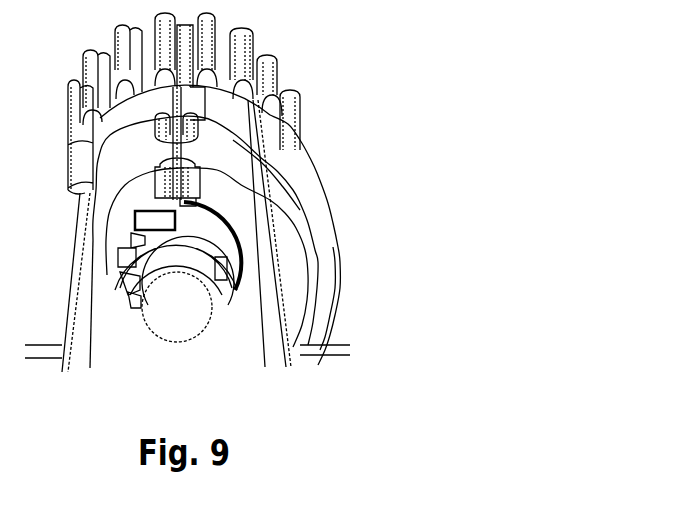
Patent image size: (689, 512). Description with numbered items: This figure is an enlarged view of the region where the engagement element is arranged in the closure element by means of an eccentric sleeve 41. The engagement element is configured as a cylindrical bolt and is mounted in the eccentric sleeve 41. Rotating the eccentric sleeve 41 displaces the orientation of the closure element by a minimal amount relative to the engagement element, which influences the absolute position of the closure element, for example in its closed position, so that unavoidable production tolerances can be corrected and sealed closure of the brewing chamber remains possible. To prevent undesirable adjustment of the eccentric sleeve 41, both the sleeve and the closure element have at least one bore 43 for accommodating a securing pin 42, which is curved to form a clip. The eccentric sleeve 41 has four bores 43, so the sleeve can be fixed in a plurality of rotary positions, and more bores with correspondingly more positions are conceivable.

The securing pin 42 is at (180, 107).
The bore 43 is at (190, 200).
The eccentric sleeve 41 is at (217, 245).